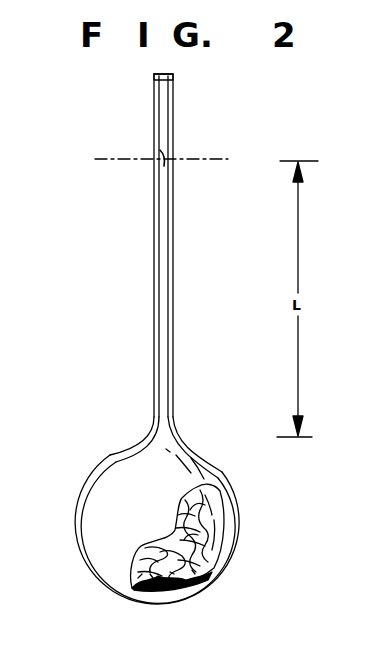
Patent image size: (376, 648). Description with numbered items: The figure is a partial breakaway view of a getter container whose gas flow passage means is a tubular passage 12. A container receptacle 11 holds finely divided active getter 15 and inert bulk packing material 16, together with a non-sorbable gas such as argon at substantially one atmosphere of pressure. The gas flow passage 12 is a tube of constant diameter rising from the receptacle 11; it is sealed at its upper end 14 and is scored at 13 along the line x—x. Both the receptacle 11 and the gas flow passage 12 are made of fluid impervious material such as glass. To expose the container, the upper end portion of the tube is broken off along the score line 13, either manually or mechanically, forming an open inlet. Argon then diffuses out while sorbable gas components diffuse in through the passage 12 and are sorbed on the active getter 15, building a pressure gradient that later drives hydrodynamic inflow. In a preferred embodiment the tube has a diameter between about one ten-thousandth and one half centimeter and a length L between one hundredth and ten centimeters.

The container receptacle 11 is at (78, 501).
The tubular gas flow passage 12 is at (165, 298).
The score line 13 is at (164, 152).
The sealed upper end 14 is at (166, 78).
The finely divided active getter 15 is at (156, 596).
The inert bulk packing material 16 is at (214, 519).